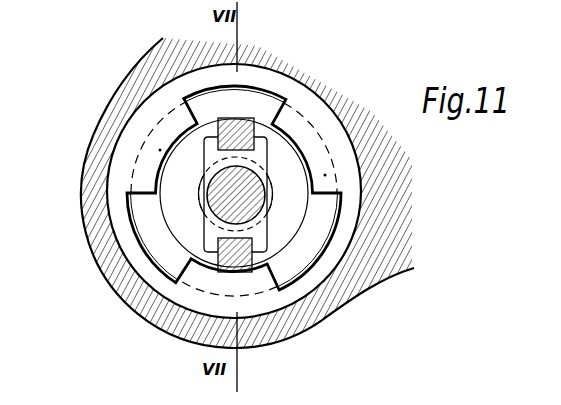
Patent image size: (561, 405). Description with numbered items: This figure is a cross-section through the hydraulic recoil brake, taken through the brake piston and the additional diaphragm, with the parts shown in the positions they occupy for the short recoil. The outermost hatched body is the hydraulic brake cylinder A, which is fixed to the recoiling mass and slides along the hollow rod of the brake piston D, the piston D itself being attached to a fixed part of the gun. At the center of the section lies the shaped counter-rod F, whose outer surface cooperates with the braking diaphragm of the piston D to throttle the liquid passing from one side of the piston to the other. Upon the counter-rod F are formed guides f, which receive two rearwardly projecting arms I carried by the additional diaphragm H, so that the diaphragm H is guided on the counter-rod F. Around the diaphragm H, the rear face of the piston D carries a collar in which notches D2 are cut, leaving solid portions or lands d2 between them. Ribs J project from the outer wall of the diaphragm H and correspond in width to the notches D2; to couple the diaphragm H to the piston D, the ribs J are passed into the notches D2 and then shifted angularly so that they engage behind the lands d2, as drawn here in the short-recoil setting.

The hydraulic brake cylinder A is at (152, 313).
The rearwardly projecting arms I is at (327, 122).
The brake piston D is at (304, 128).
The notches D2 is at (191, 98).
The lands d2 is at (160, 150).
The ribs J is at (265, 102).
The additional diaphragm H is at (175, 210).
The guides f is at (260, 160).
The shaped counter-rod F is at (225, 193).